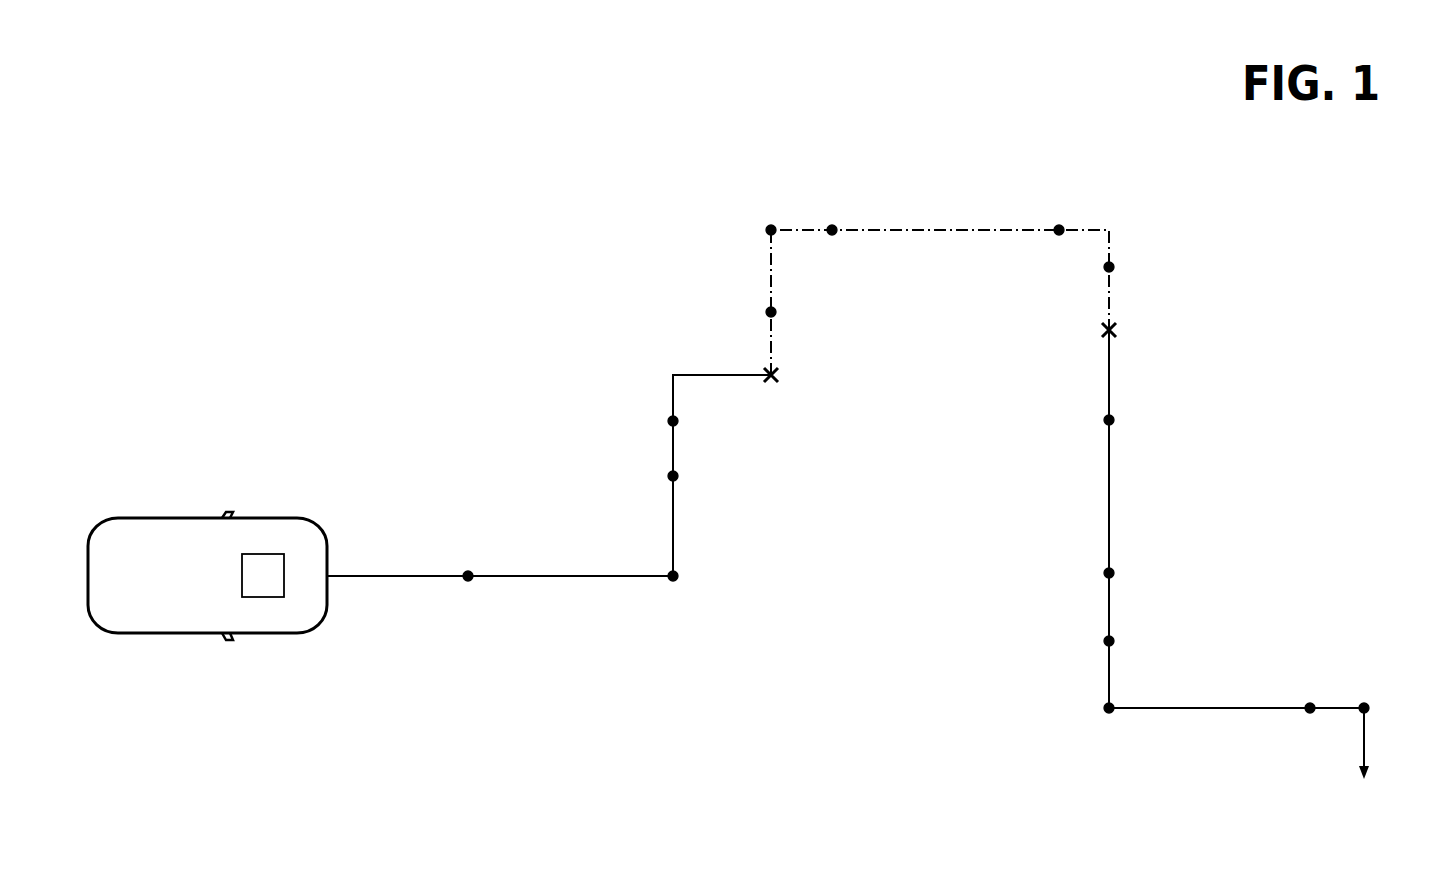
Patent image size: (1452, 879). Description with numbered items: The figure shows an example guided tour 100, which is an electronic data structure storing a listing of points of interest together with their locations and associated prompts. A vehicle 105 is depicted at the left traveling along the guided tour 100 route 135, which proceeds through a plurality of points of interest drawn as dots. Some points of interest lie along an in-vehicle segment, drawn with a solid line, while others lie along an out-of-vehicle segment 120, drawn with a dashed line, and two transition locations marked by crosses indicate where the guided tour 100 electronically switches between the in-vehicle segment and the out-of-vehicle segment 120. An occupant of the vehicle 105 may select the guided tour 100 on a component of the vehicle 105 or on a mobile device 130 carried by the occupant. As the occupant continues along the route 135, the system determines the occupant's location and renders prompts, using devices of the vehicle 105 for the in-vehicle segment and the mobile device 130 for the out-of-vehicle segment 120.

The guided tour 100 is at (268, 197).
The vehicle 105 is at (150, 518).
The out-of-vehicle segment 120 is at (554, 212).
The mobile device 130 is at (262, 553).
The route 135 is at (568, 578).